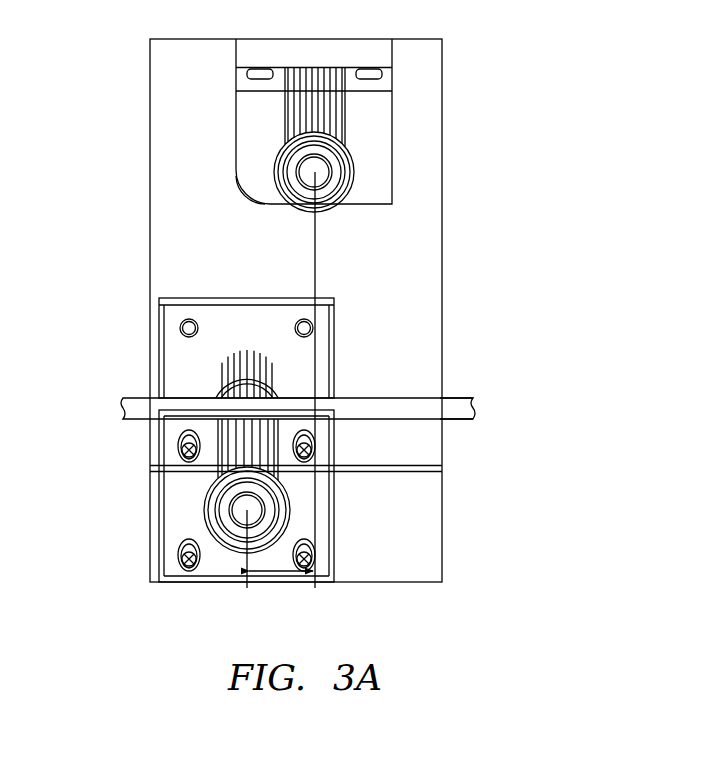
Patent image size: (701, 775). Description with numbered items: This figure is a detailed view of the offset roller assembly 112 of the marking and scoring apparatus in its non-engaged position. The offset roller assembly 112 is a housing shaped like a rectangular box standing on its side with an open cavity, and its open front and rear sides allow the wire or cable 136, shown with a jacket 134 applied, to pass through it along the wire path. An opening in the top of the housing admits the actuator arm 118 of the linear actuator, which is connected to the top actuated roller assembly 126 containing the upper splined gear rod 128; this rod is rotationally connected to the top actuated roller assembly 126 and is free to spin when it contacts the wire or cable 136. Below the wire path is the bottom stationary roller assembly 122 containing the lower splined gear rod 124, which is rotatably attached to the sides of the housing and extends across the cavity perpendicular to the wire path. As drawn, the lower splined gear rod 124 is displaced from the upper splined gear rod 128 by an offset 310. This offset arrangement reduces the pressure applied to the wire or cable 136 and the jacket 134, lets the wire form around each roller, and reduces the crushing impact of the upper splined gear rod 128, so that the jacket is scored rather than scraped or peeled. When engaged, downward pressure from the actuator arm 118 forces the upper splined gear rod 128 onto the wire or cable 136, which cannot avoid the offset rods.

The offset roller assembly 112 is at (515, 52).
The actuator arm 118 is at (294, 50).
The upper splined gear rod 128 is at (348, 112).
The top actuated roller assembly 126 is at (357, 178).
The lower splined gear rod 124 is at (214, 448).
The bottom stationary roller assembly 122 is at (210, 510).
The jacket 134 is at (454, 398).
The wire or cable 136 is at (482, 410).
The offset 310 is at (281, 575).